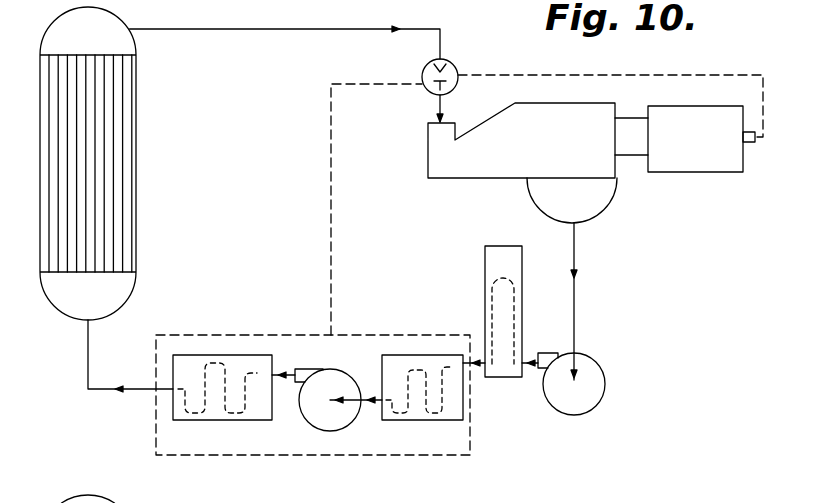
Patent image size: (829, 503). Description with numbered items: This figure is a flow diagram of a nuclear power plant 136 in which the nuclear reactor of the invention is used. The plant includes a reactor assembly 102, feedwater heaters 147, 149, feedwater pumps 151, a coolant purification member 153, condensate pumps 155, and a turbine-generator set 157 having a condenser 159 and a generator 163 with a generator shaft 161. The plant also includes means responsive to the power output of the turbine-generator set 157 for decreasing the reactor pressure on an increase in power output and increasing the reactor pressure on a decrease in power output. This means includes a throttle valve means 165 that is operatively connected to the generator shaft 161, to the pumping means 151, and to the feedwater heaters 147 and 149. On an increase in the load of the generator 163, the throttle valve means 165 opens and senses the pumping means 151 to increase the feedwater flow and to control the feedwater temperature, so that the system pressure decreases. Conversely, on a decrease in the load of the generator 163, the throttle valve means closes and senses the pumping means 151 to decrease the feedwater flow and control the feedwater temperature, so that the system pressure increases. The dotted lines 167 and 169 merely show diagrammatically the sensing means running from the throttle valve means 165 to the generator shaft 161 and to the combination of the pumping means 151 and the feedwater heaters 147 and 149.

The reactor assembly 102 is at (137, 162).
The nuclear power plant 136 is at (372, 457).
The feedwater heater 147 is at (268, 320).
The feedwater heater 149 is at (460, 321).
The feedwater pumps 151 is at (370, 361).
The coolant purification member 153 is at (505, 250).
The condensate pumps 155 is at (600, 380).
The turbine-generator set 157 is at (614, 104).
The condenser 159 is at (598, 208).
The generator shaft 161 is at (750, 144).
The generator 163 is at (677, 116).
The throttle valve means 165 is at (455, 68).
The dotted line 167 is at (331, 208).
The dotted line 169 is at (586, 64).